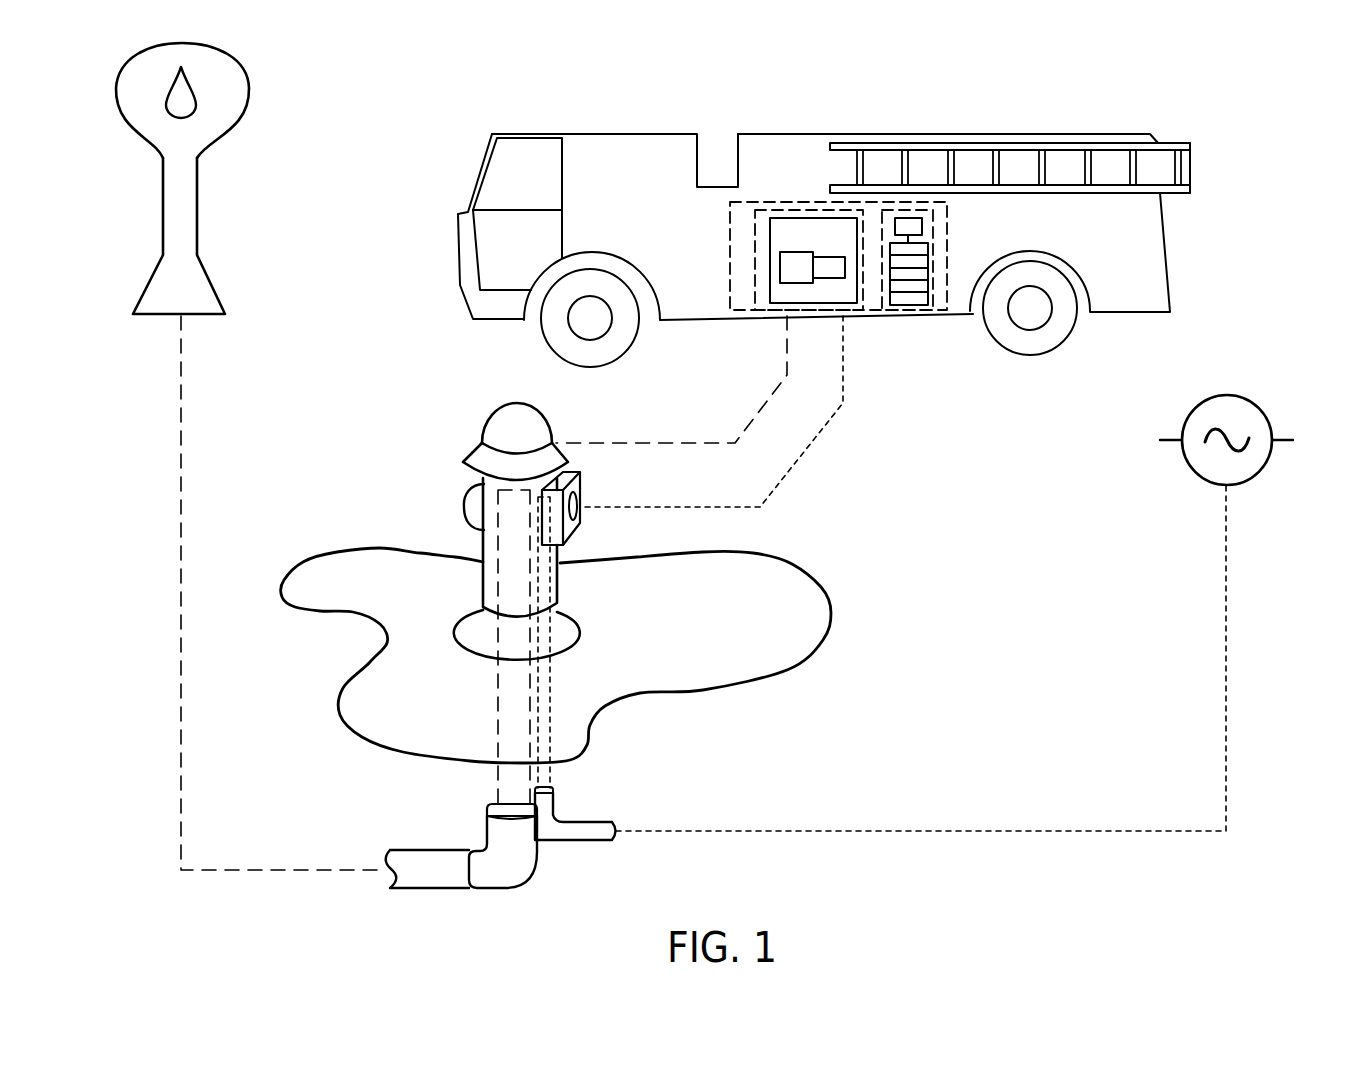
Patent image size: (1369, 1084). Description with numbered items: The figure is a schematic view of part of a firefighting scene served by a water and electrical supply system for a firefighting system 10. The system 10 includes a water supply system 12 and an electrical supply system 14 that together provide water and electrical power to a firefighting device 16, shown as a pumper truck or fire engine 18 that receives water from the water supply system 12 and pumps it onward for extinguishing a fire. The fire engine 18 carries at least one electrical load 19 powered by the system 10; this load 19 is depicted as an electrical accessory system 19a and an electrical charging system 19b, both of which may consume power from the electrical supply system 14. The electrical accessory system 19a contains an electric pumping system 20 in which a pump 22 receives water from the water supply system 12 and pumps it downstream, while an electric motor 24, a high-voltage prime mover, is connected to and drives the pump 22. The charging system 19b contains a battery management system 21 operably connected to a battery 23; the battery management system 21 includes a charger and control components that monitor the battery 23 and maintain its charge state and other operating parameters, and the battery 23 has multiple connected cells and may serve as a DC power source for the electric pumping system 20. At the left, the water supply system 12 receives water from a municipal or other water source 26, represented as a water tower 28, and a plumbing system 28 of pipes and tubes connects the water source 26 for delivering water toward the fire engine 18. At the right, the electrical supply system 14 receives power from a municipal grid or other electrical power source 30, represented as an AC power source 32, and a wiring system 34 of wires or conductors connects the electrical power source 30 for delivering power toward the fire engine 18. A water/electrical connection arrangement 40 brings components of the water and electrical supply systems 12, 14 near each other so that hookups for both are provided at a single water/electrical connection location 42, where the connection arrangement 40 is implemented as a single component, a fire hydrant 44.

The firefighting system 10 is at (372, 318).
The water supply system 12 is at (186, 178).
The electrical supply system 14 is at (1242, 441).
The firefighting device 16 is at (791, 210).
The fire engine 18 is at (455, 200).
The electrical load 19 is at (780, 200).
The electrical accessory system 19a is at (772, 210).
The electrical charging system 19b is at (885, 212).
The electric pumping system 20 is at (767, 233).
The battery management system 21 is at (921, 226).
The pump 22 is at (789, 262).
The battery 23 is at (919, 268).
The electric motor 24 is at (835, 257).
The water source 26 is at (120, 131).
The water tower 28 is at (122, 102).
The electrical power source 30 is at (1189, 484).
The AC power source 32 is at (1248, 466).
The wiring system 34 is at (596, 846).
The water/electrical connection arrangement 40 is at (463, 603).
The water/electrical connection location 42 is at (700, 603).
The fire hydrant 44 is at (467, 540).